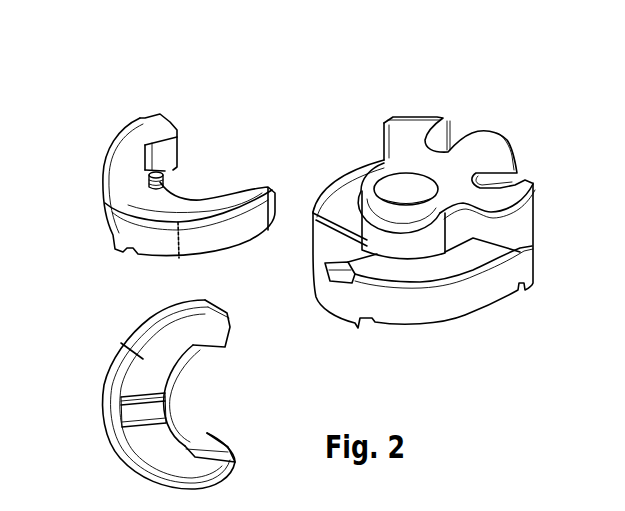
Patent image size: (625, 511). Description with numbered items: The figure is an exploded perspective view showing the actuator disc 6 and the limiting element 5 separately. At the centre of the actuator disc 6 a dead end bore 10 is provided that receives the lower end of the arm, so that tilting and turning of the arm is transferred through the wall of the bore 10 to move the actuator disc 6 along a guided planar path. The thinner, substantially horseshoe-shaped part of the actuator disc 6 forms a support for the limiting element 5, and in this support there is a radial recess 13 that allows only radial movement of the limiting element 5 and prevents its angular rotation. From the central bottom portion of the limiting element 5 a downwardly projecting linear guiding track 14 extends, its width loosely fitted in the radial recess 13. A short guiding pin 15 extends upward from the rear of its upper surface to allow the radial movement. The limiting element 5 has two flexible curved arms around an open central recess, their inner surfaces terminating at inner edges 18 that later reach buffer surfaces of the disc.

The limiting element 5 is at (222, 235).
The actuator disc 6 is at (458, 300).
The dead end bore 10 is at (407, 187).
The radial recess 13 is at (338, 270).
The guiding track 14 is at (150, 417).
The guiding pin 15 is at (162, 179).
The inner edges 18 is at (177, 147).